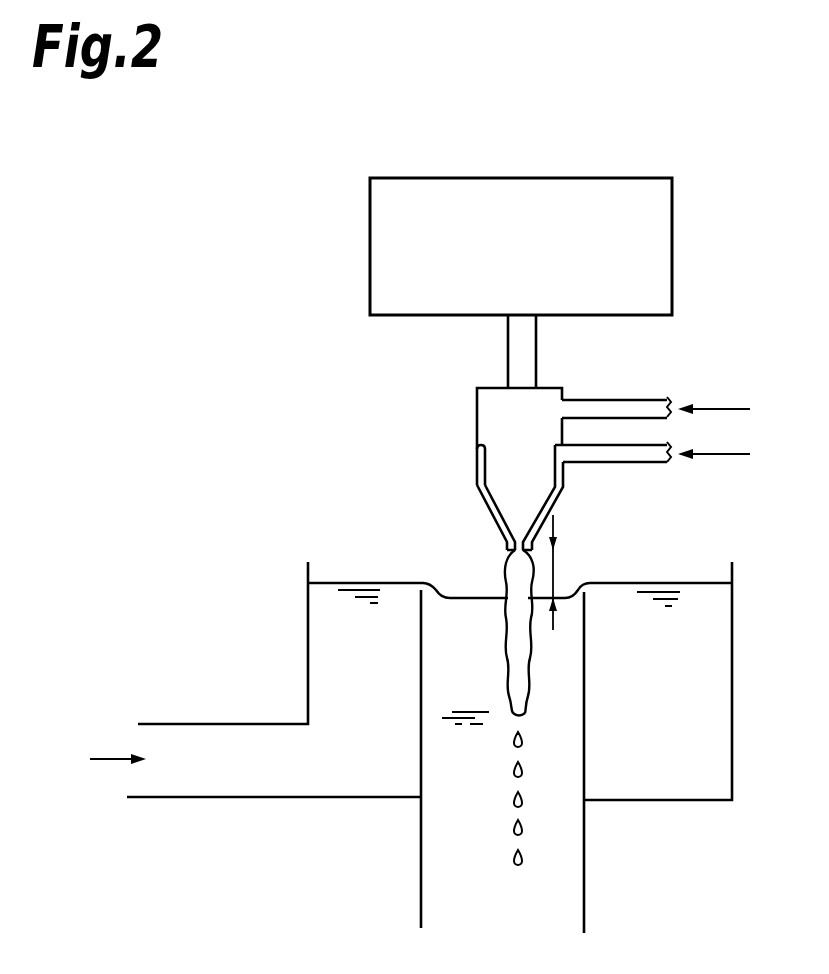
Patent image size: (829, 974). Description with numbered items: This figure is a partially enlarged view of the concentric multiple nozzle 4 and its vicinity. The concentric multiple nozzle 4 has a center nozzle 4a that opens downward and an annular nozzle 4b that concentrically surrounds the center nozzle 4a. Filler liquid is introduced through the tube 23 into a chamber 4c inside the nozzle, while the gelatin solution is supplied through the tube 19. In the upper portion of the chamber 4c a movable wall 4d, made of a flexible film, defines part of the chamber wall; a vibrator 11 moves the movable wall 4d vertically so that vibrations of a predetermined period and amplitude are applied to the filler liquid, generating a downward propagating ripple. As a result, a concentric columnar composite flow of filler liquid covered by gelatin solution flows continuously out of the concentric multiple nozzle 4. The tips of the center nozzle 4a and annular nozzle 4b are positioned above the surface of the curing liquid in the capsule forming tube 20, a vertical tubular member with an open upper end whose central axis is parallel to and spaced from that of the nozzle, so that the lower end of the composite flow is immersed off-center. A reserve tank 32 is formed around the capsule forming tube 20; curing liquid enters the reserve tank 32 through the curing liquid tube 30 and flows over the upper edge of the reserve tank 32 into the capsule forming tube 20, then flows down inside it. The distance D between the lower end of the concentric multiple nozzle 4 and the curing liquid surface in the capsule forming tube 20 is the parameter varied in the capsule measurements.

The vibrator 11 is at (673, 246).
The concentric multiple nozzle 4 is at (471, 443).
The center nozzle 4a is at (512, 552).
The annular nozzle 4b is at (540, 550).
The chamber 4c is at (505, 463).
The movable wall 4d is at (548, 389).
The tube 23 is at (610, 401).
The tube 19 is at (637, 463).
The distance D is at (556, 582).
The curing liquid tube 30 is at (225, 724).
The reserve tank 32 is at (732, 677).
The capsule forming tube 20 is at (584, 897).